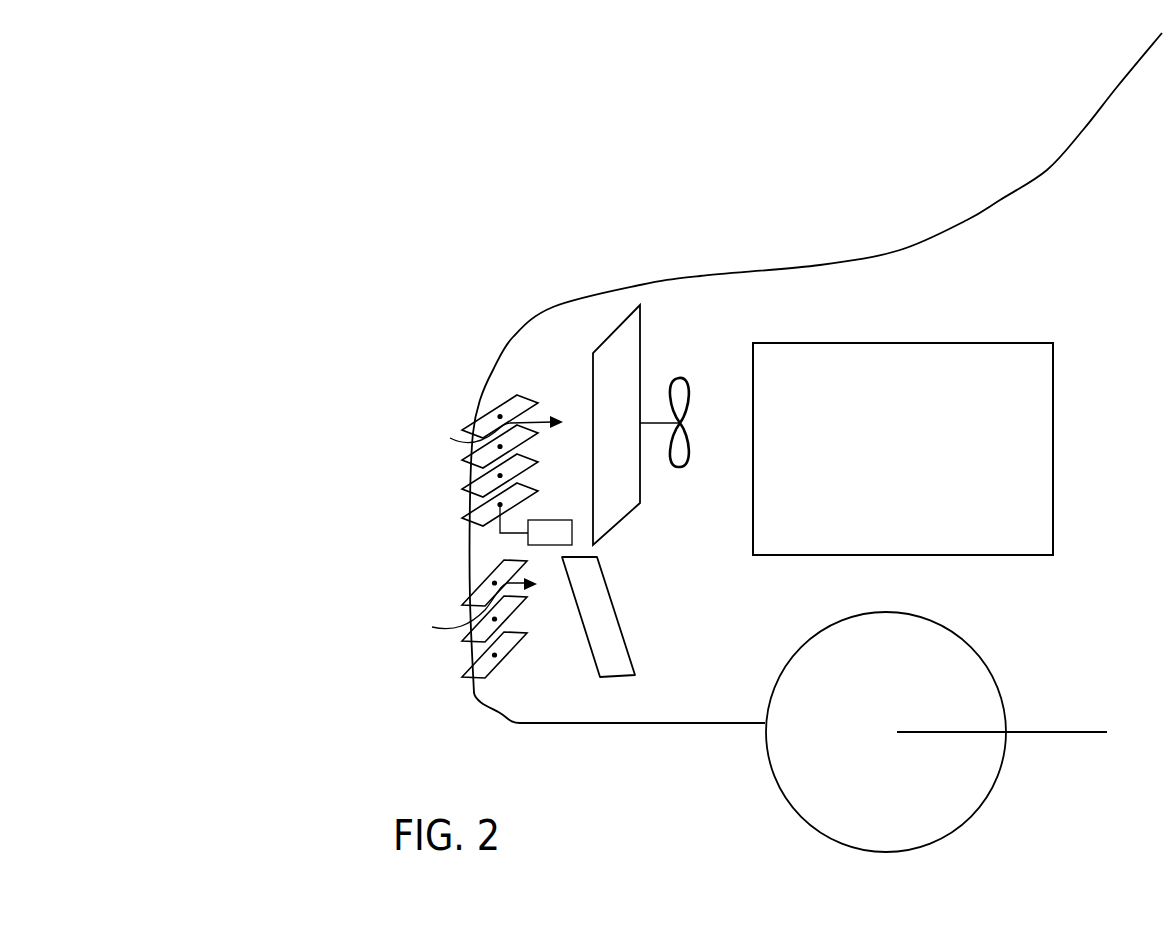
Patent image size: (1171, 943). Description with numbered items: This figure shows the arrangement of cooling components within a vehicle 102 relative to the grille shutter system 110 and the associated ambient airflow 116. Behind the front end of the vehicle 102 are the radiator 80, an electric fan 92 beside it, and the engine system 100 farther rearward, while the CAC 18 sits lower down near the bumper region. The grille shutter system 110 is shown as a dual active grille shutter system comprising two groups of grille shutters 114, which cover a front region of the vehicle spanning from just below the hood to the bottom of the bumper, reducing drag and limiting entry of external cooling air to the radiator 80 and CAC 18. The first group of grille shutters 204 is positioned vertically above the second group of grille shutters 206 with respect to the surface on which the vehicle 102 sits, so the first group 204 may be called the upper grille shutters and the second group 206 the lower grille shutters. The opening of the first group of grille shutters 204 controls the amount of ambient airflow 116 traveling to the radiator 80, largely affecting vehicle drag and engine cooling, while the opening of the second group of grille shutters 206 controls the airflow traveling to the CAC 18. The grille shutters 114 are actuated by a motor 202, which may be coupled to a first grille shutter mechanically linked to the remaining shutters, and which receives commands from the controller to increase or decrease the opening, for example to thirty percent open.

The CAC 18 is at (587, 645).
The radiator 80 is at (618, 523).
The electric fan 92 is at (680, 467).
The engine system 100 is at (753, 343).
The vehicle 102 is at (1036, 167).
The grille shutter system 110 is at (356, 538).
The grille shutters 114 is at (512, 396).
The ambient airflow 116 is at (483, 525).
The motor 202 is at (565, 543).
The first group of grille shutters 204 is at (464, 445).
The second group of grille shutters 206 is at (420, 650).